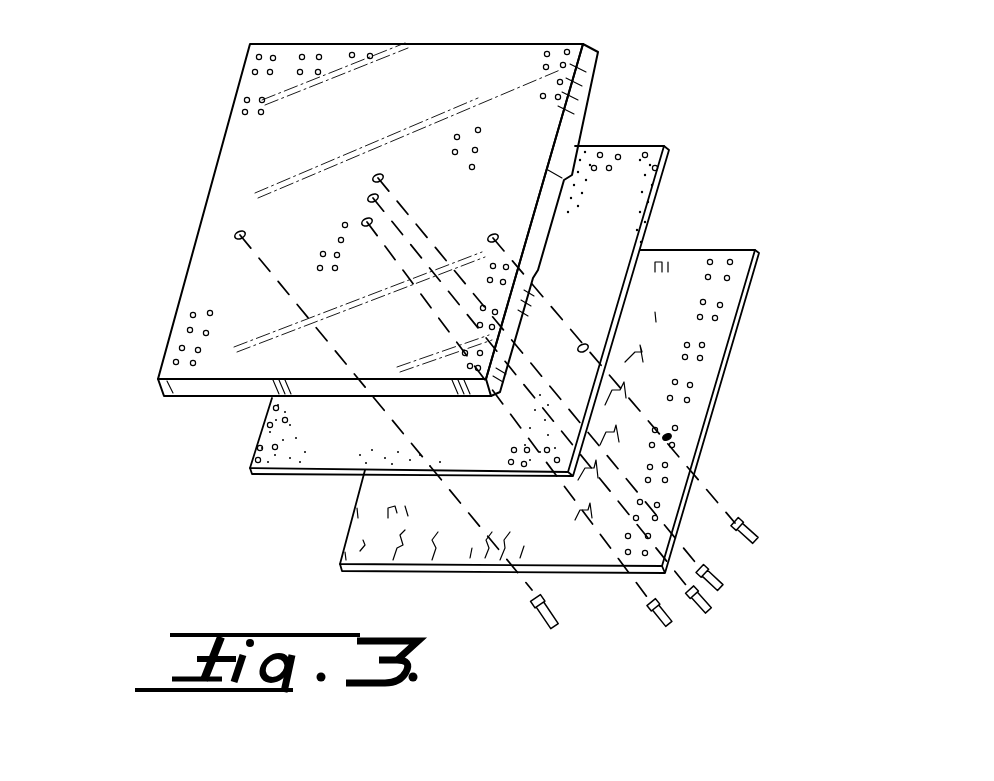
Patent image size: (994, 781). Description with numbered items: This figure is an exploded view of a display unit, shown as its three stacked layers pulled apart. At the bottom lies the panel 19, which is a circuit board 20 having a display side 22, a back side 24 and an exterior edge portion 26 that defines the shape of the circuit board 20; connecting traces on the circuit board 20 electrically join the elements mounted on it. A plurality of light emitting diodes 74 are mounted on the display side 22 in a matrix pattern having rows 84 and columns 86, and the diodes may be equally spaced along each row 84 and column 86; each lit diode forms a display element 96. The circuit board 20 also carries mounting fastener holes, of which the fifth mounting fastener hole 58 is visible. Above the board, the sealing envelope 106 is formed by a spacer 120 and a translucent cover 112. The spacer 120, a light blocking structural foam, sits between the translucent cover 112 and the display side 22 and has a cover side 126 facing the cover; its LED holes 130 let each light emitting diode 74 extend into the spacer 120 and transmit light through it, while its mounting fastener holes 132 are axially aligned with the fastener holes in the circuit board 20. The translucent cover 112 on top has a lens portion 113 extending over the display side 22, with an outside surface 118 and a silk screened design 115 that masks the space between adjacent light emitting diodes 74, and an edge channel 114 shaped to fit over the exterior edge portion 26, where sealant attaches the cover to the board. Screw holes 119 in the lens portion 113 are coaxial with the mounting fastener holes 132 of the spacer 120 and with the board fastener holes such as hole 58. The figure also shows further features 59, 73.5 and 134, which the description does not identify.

The panel 19 is at (752, 152).
The circuit board 20 is at (380, 488).
The display side 22 is at (462, 572).
The back side 24 is at (352, 580).
The exterior edge portion 26 is at (373, 572).
The fifth mounting fastener hole 58 is at (670, 437).
The edge contacts 59 is at (663, 567).
The alignment holes 73.5 is at (733, 277).
The light emitting diodes 74 is at (713, 258).
The rows 84 is at (196, 452).
The columns 86 is at (431, 341).
The display element 96 is at (722, 307).
The sealing envelope 106 is at (138, 243).
The translucent cover 112 is at (190, 335).
The lens portion 113 is at (225, 198).
The edge channel 114 is at (200, 397).
The design 115 is at (250, 83).
The outside surface 118 is at (258, 53).
The screw holes 119 is at (376, 177).
The spacer 120 is at (296, 473).
The cover side 126 is at (626, 152).
The LED holes 130 is at (250, 466).
The mounting fastener holes 132 is at (588, 347).
The screws 134 is at (558, 610).